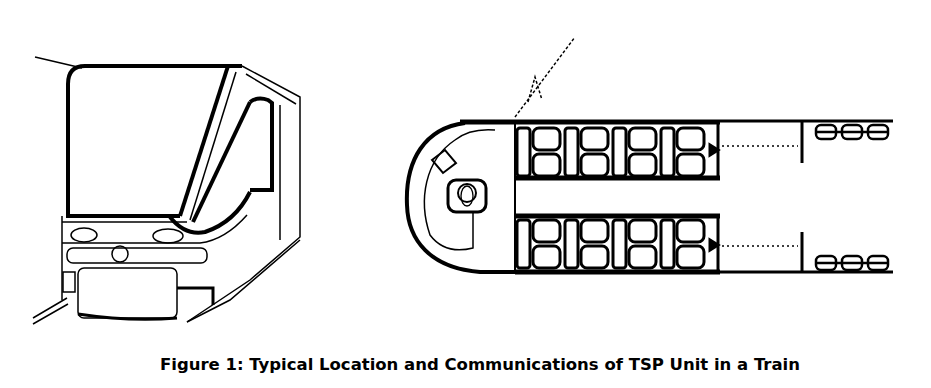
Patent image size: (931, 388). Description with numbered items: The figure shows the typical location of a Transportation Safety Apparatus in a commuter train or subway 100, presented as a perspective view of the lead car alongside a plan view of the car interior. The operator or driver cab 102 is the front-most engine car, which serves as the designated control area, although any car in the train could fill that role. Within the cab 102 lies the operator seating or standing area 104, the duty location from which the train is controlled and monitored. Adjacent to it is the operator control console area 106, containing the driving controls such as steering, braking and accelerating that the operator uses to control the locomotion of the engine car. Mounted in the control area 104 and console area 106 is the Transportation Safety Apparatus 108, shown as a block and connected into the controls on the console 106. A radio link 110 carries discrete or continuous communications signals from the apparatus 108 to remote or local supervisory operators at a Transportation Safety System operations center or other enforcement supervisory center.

The commuter train 100 is at (243, 68).
The operator cab 102 is at (424, 130).
The operator seating area 104 is at (464, 186).
The operator control console area 106 is at (443, 228).
The Transportation Safety Apparatus 108 is at (428, 158).
The radio link 110 is at (558, 80).